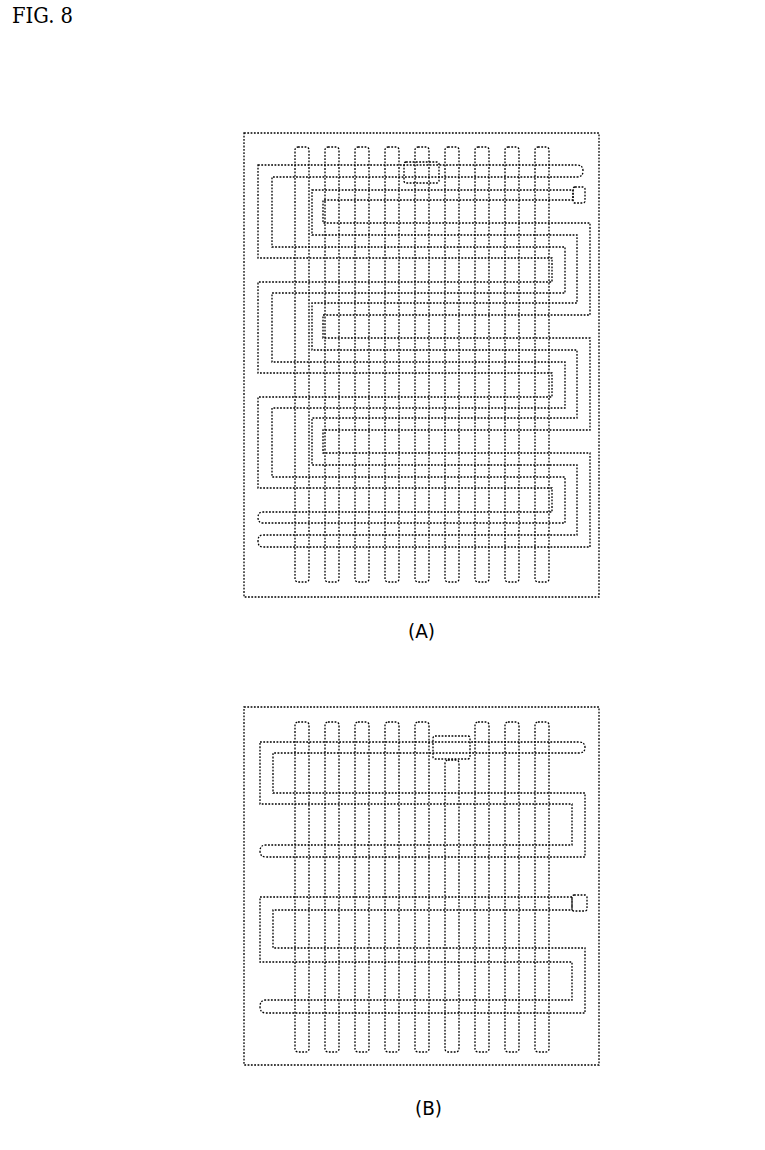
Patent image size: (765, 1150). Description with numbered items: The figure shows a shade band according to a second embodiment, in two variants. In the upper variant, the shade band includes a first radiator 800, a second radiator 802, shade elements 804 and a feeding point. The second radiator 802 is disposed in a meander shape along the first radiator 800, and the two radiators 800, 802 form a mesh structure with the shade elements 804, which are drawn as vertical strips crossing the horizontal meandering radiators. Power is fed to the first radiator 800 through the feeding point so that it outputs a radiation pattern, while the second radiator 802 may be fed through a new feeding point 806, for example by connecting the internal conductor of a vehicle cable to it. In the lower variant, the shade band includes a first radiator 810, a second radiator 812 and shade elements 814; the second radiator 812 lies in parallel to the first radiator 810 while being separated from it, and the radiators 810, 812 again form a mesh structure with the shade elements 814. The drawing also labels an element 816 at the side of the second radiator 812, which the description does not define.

The first radiator 800 is at (282, 162).
The second radiator 802 is at (573, 202).
The shade elements 804 is at (512, 153).
The feeding point 806 is at (585, 193).
The first radiator 810 is at (315, 740).
The second radiator 812 is at (563, 897).
The shade elements 814 is at (295, 733).
The pad 816 is at (587, 903).